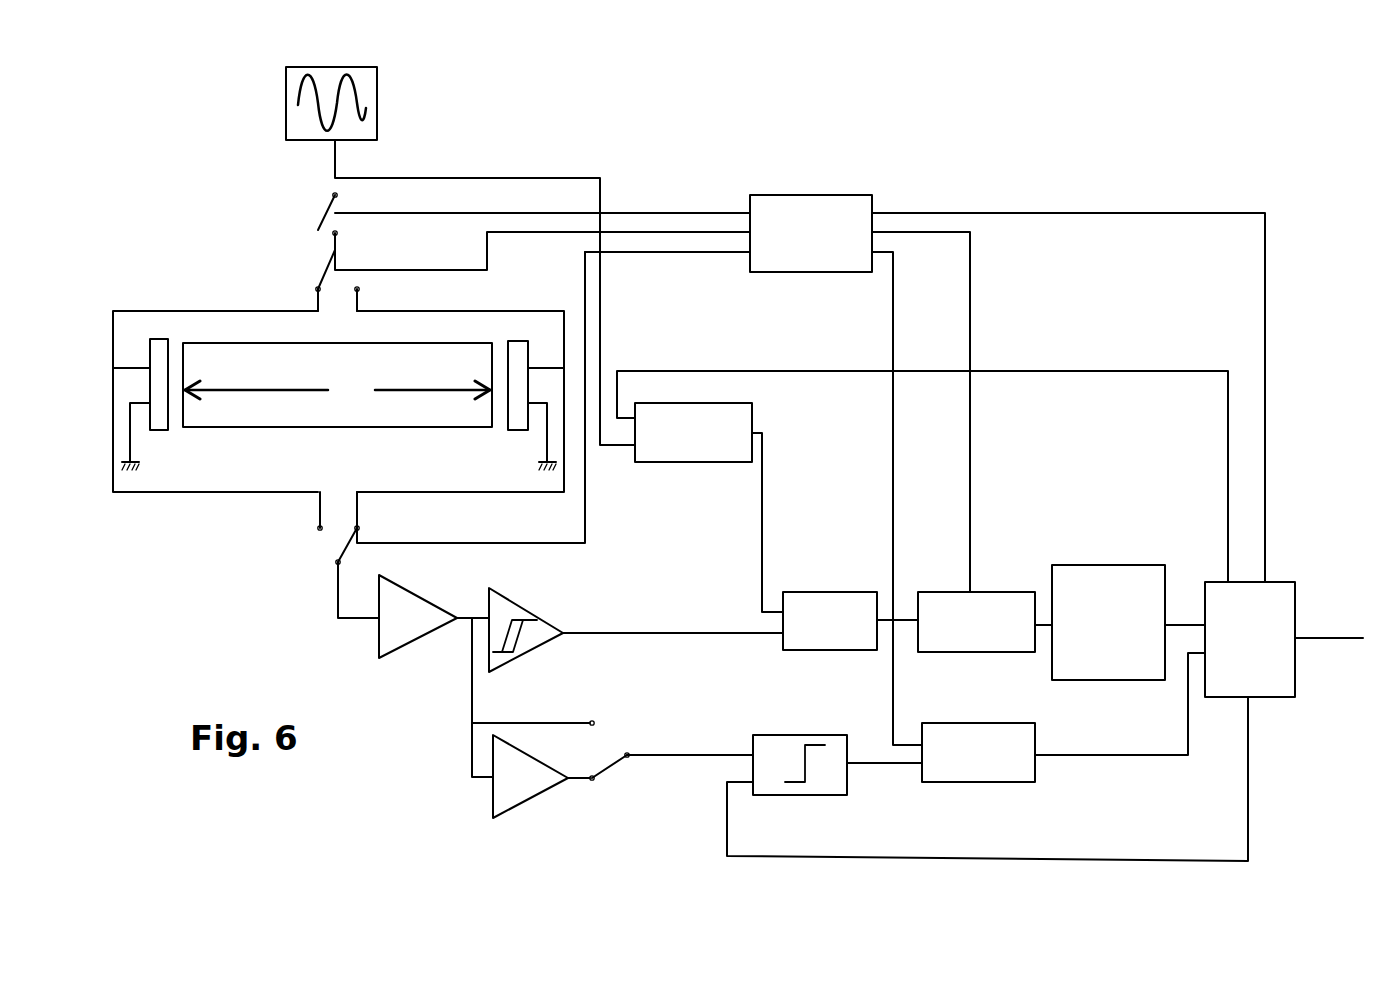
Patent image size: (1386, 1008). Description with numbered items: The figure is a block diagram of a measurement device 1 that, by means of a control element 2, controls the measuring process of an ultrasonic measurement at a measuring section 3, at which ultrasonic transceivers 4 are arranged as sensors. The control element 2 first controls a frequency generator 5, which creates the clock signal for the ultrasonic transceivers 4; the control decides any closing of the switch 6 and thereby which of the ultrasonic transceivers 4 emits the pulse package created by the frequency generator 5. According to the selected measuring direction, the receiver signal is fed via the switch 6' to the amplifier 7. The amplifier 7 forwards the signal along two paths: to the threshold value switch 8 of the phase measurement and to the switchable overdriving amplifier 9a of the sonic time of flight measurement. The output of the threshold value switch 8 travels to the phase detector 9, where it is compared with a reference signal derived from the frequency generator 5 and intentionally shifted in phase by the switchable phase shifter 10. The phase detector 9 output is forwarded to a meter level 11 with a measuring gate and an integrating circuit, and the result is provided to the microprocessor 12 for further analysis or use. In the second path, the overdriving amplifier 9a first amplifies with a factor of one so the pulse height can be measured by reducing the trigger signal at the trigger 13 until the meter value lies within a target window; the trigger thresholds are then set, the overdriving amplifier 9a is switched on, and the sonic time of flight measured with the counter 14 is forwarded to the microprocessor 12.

The measurement device 1 is at (967, 147).
The control element 2 is at (770, 213).
The measuring section 3 is at (337, 385).
The ultrasonic transceivers 4 is at (161, 346).
The frequency generator 5 is at (377, 95).
The switch 6 is at (282, 252).
The switch 6' is at (295, 562).
The amplifier 7 is at (377, 653).
The threshold value switch 8 is at (513, 597).
The phase detector 9 is at (793, 605).
The switchable overdriving amplifier 9a is at (508, 815).
The switchable phase shifter 10 is at (681, 453).
The meter level 11 is at (1072, 560).
The microprocessor 12 is at (1295, 698).
The trigger 13 is at (783, 733).
The counter 14 is at (1022, 775).